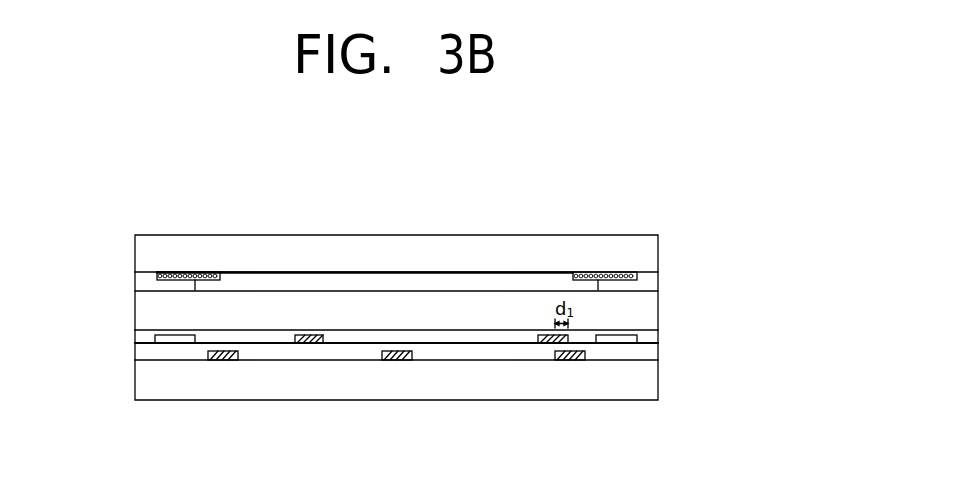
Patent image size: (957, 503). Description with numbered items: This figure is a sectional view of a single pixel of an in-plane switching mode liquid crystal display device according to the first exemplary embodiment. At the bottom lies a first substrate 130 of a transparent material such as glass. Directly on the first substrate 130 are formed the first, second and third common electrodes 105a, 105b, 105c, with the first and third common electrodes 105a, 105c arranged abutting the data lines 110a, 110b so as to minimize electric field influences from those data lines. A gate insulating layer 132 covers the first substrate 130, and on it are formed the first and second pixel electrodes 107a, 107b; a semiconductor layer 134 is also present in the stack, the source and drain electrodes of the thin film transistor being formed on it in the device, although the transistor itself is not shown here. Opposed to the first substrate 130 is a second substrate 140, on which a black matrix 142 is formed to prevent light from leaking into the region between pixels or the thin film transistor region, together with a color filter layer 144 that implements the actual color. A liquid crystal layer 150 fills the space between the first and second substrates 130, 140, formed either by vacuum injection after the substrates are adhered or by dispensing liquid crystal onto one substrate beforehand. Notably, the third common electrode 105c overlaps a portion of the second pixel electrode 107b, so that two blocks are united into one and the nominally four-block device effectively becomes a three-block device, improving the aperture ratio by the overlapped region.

The first substrate 130 is at (143, 373).
The gate insulating layer 132 is at (647, 353).
The semiconductor layer 134 is at (647, 338).
The second substrate 140 is at (533, 257).
The black matrix 142 is at (182, 270).
The color filter layer 144 is at (387, 282).
The liquid crystal layer 150 is at (645, 311).
The first common electrode 105a is at (223, 360).
The second common electrode 105b is at (392, 360).
The third common electrode 105c is at (568, 360).
The first pixel electrode 107a is at (309, 343).
The second pixel electrode 107b is at (542, 343).
The data line 110a is at (175, 343).
The data line 110b is at (617, 343).